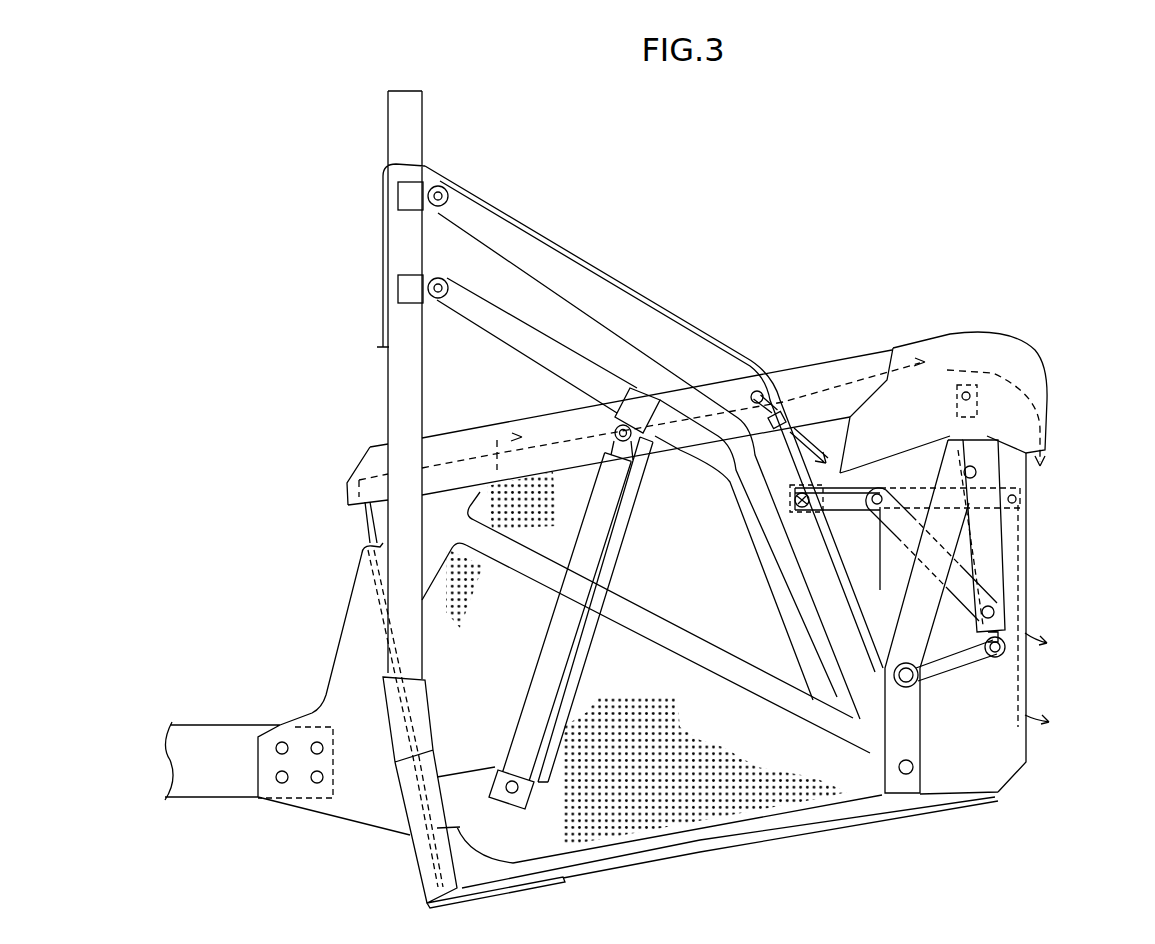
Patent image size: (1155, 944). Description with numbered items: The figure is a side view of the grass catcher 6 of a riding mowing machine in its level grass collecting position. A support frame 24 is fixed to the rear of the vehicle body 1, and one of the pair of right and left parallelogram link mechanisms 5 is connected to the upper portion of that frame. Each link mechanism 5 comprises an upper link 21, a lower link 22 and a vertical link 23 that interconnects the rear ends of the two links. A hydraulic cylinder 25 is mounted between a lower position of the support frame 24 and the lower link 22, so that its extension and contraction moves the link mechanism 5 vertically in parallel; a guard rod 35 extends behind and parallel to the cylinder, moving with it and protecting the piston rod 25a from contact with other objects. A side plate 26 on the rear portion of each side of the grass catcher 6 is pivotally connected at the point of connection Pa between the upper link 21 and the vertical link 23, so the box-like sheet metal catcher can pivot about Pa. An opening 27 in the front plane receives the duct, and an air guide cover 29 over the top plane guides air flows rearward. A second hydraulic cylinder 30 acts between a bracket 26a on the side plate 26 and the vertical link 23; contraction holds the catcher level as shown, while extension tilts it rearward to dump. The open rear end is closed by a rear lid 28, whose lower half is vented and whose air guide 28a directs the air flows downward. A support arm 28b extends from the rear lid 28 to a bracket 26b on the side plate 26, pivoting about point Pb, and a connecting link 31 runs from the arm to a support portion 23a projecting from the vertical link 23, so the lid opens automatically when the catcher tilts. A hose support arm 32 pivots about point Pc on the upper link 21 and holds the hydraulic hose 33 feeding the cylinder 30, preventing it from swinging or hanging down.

The vehicle body 1 is at (207, 722).
The parallelogram link mechanism 5 is at (731, 528).
The grass catcher 6 is at (847, 356).
The upper link 21 is at (637, 307).
The lower link 22 is at (503, 340).
The vertical link 23 is at (910, 717).
The support portion 23a is at (977, 550).
The support frame 24 is at (386, 390).
The hydraulic cylinder 25 is at (545, 665).
The piston rod 25a is at (614, 432).
The side plate 26 is at (857, 590).
The bracket 26a is at (1003, 654).
The bracket 26b is at (845, 560).
The opening 27 is at (415, 778).
The rear lid 28 is at (1005, 745).
The air guide 28a is at (1017, 357).
The support arm 28b is at (898, 492).
The air guide cover 29 is at (800, 382).
The hydraulic cylinder 30 is at (980, 530).
The connecting link 31 is at (897, 550).
The hose support arm 32 is at (740, 420).
The hydraulic hose 33 is at (713, 332).
The guard rod 35 is at (585, 663).
The point of connection Pa is at (888, 663).
The point Pb is at (798, 506).
The point Pc is at (752, 392).